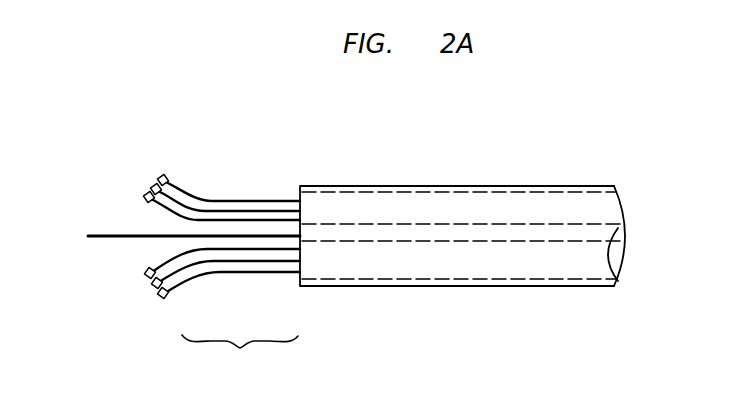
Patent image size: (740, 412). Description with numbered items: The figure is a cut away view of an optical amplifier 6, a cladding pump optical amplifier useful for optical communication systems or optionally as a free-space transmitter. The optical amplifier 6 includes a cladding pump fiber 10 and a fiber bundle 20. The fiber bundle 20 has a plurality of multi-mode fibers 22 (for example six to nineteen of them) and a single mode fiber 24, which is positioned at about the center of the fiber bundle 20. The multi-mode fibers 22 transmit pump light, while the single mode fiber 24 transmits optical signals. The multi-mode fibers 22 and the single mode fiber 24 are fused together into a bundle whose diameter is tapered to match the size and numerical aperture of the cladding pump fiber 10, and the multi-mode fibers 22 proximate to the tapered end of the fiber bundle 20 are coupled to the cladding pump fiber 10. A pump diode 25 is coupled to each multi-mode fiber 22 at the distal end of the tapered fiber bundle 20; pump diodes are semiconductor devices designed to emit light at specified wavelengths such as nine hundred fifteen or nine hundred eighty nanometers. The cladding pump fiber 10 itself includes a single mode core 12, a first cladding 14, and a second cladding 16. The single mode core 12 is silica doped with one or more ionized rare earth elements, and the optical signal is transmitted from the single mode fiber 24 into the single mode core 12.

The optical amplifier 6 is at (566, 378).
The cladding pump fiber 10 is at (476, 286).
The single mode core 12 is at (556, 236).
The first cladding 14 is at (500, 212).
The second cladding 16 is at (440, 188).
The fiber bundle 20 is at (240, 358).
The multi-mode fibers 22 is at (178, 189).
The single mode fiber 24 is at (160, 236).
The pump diode 25 is at (159, 181).